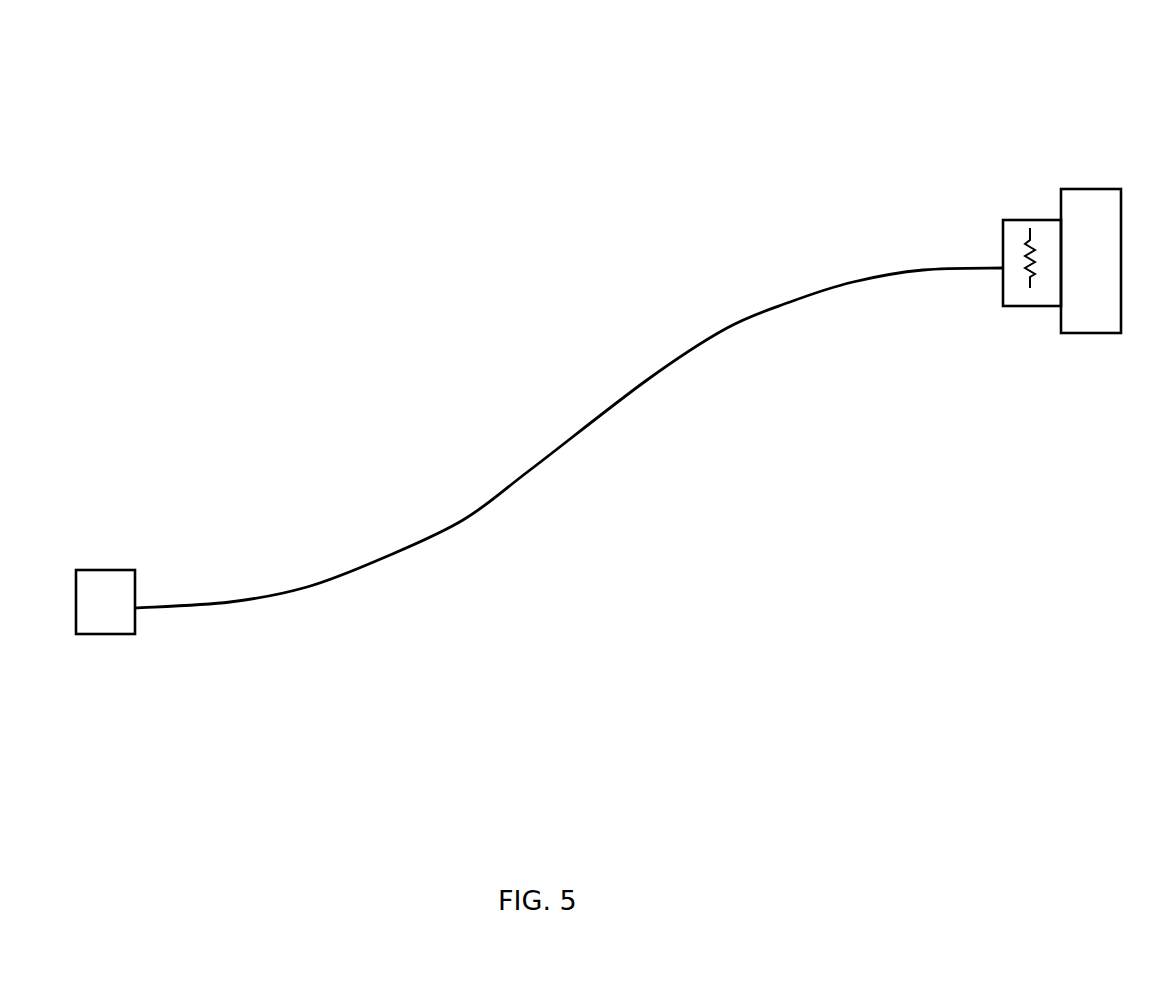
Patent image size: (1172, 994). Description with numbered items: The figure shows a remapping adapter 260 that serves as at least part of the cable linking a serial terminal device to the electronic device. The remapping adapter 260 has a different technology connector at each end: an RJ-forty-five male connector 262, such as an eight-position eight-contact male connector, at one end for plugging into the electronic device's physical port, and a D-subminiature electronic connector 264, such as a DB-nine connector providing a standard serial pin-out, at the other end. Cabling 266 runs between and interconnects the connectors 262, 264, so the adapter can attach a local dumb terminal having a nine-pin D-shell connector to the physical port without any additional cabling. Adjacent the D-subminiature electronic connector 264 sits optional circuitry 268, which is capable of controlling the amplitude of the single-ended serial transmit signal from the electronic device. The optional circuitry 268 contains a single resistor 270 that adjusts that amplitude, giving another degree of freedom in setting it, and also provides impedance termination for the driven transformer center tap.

The remapping adapter 260 is at (238, 104).
The RJ-45 male connector 262 is at (108, 636).
The D-subminiature electronic connector 264 is at (1090, 325).
The cabling 266 is at (590, 425).
The optional circuitry 268 is at (1022, 308).
The resistor 270 is at (1008, 236).